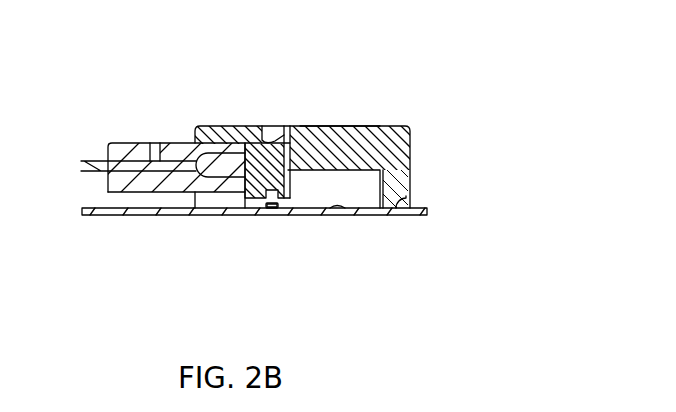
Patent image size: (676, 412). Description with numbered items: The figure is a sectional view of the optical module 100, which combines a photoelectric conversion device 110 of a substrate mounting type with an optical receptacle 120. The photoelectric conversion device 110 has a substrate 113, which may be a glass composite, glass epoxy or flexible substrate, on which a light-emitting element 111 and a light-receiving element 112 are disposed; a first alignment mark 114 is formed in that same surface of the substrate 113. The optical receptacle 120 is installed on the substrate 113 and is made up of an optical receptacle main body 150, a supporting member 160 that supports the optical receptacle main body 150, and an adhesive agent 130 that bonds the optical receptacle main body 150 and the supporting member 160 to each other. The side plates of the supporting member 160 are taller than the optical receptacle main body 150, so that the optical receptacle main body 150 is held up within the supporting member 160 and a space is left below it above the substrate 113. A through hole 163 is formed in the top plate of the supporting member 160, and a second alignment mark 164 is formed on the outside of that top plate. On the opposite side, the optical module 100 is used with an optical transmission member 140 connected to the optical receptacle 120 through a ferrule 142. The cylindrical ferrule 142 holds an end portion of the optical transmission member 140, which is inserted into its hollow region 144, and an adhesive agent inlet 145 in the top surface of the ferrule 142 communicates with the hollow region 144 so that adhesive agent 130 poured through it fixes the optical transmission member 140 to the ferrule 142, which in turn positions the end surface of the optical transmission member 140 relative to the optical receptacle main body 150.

The optical module 100 is at (397, 72).
The photoelectric conversion device 110 is at (193, 278).
The light-emitting element 111 is at (273, 217).
The light-receiving element 112 is at (306, 240).
The substrate 113 is at (203, 217).
The first alignment mark 114 is at (333, 209).
The optical receptacle 120 is at (472, 135).
The adhesive agent 130 is at (295, 128).
The optical transmission member 140 is at (99, 158).
The ferrule 142 is at (127, 143).
The hollow region 144 is at (128, 162).
The adhesive agent inlet 145 is at (157, 158).
The optical receptacle main body 150 is at (288, 186).
The supporting member 160 is at (380, 153).
The through hole 163 is at (277, 128).
The second alignment mark 164 is at (338, 126).